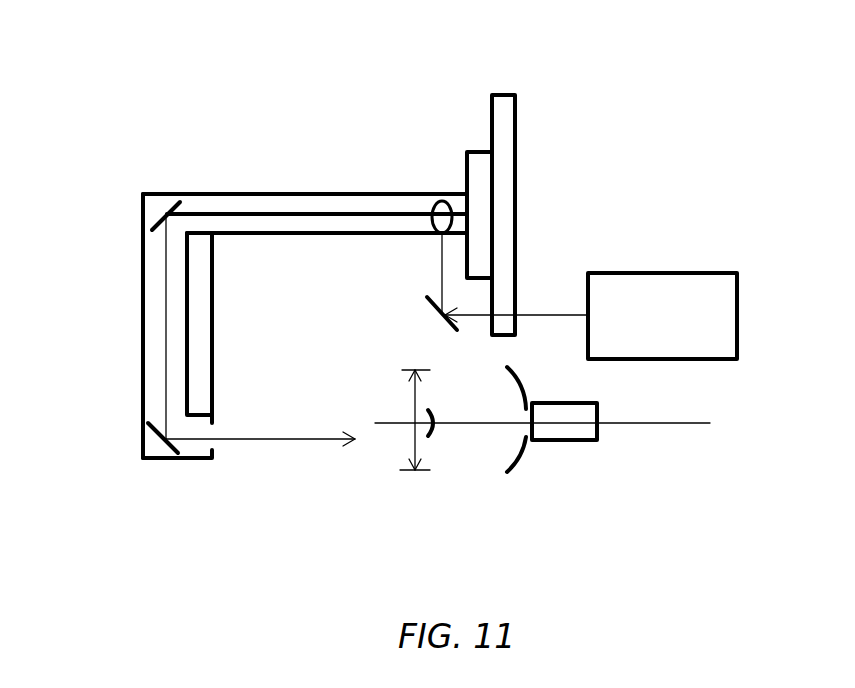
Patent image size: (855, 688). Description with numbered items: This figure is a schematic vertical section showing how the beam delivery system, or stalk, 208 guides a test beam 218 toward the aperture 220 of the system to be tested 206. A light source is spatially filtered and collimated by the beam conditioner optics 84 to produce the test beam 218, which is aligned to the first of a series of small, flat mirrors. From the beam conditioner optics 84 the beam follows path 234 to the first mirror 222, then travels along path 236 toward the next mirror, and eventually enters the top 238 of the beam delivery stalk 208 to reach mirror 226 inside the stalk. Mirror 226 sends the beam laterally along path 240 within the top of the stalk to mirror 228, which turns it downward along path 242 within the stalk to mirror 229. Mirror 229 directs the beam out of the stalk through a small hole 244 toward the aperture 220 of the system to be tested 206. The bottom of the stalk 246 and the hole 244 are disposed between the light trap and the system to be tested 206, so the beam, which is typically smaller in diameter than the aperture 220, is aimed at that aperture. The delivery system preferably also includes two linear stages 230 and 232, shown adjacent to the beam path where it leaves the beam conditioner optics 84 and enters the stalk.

The beam delivery system 208 is at (190, 168).
The path 240 is at (302, 210).
The top of the beam delivery stalk 238 is at (290, 236).
The small hole 244 is at (221, 428).
The bottom of the stalk 246 is at (129, 447).
The mirror 228 is at (158, 213).
The path 242 is at (165, 335).
The mirror 229 is at (165, 445).
The test beam 218 is at (280, 440).
The mirror 226 is at (428, 197).
The path 236 is at (438, 275).
The first mirror 222 is at (440, 320).
The linear stage 232 is at (465, 150).
The linear stage 230 is at (518, 107).
The path 234 is at (543, 310).
The beam conditioner optics 84 is at (686, 328).
The aperture 220 is at (413, 445).
The system to be tested 206 is at (612, 507).